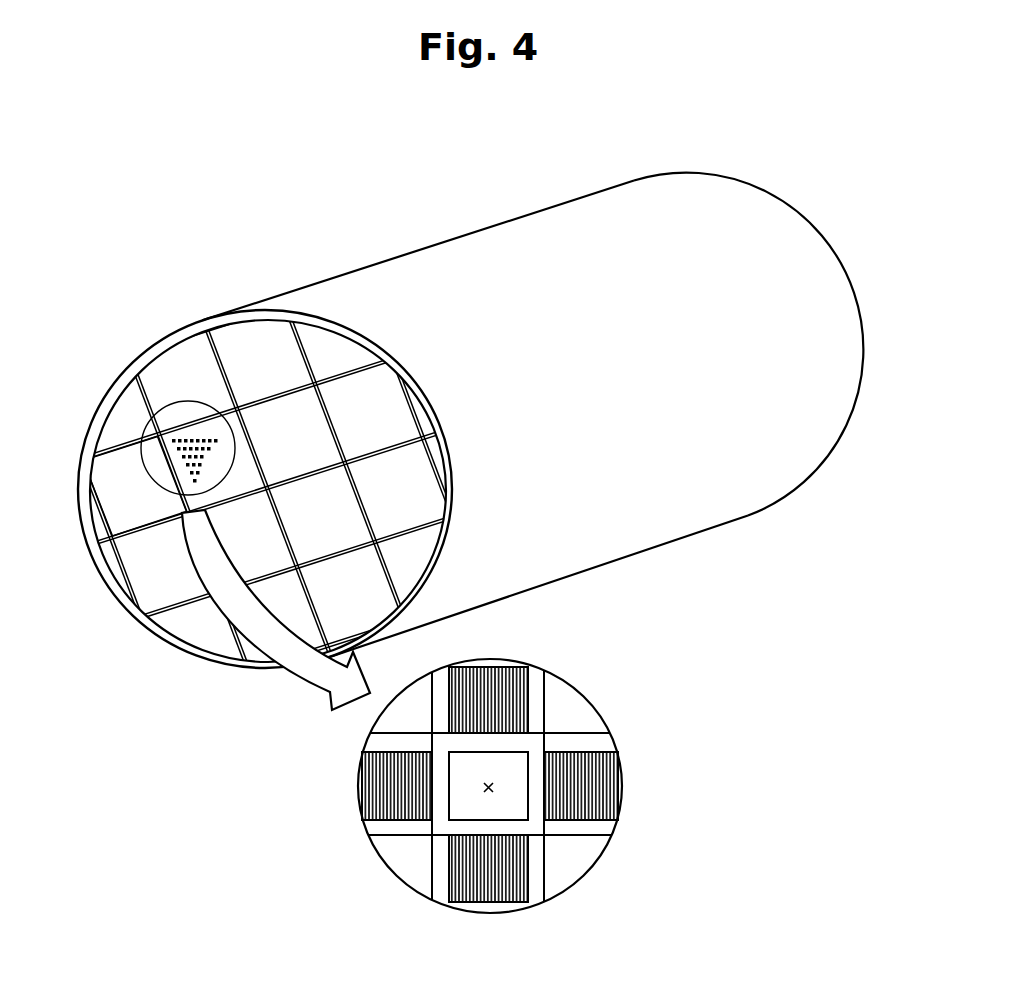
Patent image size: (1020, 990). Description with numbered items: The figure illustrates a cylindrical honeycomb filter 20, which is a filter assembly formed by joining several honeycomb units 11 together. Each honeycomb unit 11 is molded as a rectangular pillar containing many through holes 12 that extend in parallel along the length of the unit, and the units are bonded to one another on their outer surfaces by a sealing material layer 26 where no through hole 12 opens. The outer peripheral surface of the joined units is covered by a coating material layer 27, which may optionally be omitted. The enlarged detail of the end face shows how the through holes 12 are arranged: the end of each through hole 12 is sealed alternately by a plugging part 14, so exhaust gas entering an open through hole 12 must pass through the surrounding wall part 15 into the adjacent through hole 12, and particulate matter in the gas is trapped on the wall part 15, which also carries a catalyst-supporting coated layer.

The honeycomb filter 20 is at (270, 190).
The honeycomb unit 11 is at (228, 447).
The through hole 12 is at (137, 437).
The plugging part 14 is at (495, 689).
The wall part 15 is at (537, 707).
The sealing material layer 26 is at (290, 395).
The coating material layer 27 is at (382, 354).